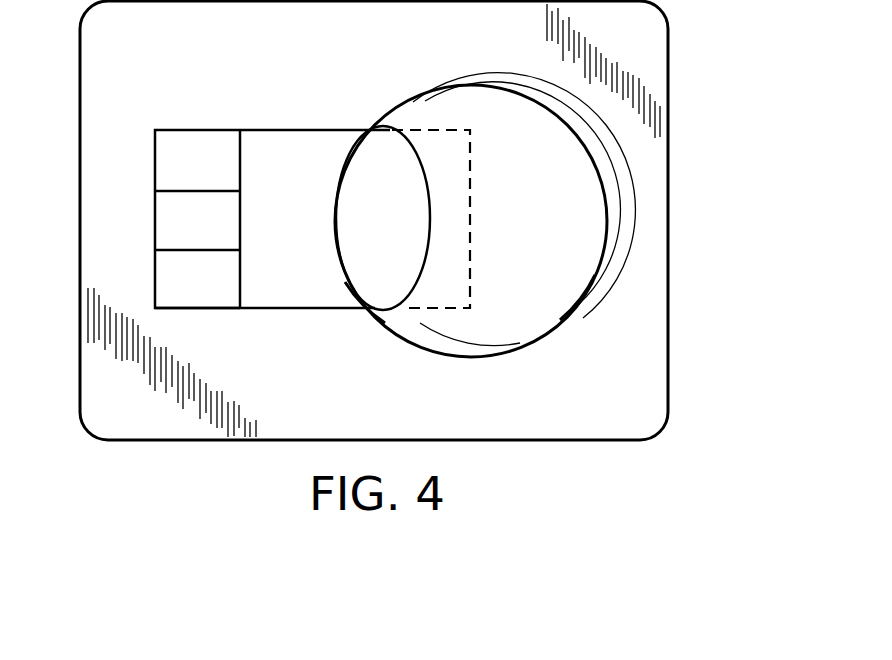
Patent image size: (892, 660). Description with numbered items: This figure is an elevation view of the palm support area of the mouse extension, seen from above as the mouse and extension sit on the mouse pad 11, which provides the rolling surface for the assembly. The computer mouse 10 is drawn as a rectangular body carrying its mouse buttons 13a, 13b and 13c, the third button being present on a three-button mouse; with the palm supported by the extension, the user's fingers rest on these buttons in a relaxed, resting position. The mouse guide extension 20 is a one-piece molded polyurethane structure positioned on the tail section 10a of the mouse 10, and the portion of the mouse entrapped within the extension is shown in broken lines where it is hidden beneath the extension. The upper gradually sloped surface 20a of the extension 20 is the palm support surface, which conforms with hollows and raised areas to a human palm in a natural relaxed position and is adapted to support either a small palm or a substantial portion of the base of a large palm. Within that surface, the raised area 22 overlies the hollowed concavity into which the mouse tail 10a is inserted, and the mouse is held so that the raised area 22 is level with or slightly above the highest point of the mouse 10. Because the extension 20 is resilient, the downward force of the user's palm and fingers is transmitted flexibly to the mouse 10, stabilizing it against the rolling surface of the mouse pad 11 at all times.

The computer mouse 10 is at (286, 129).
The tail section 10a is at (463, 247).
The mouse pad 11 is at (650, 53).
The mouse button 13a is at (224, 295).
The mouse button 13b is at (224, 237).
The mouse button 13c is at (224, 177).
The mouse guide extension 20 is at (542, 89).
The upper gradually sloped surface 20a is at (368, 290).
The raised area 22 is at (375, 155).